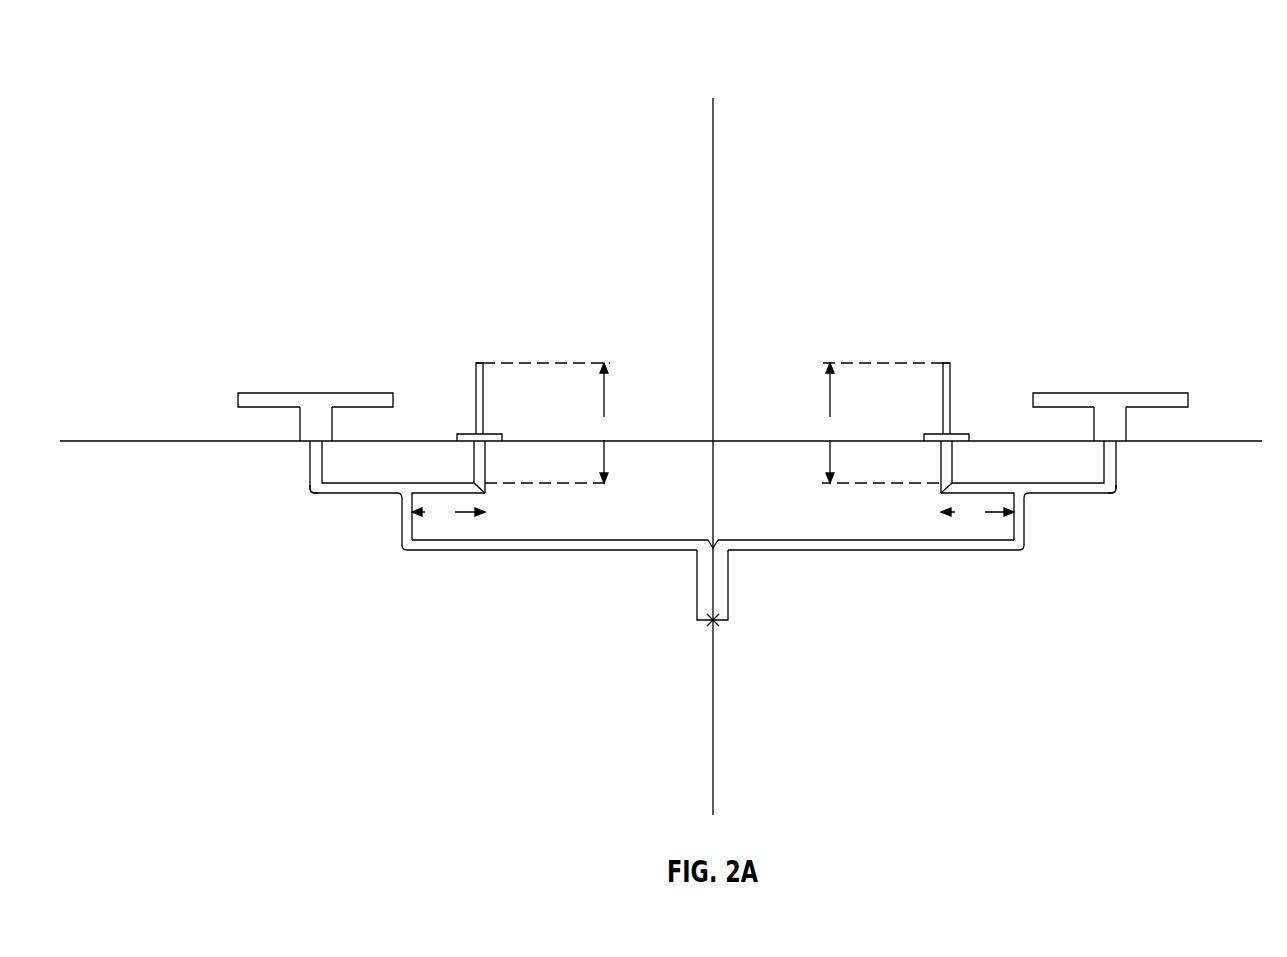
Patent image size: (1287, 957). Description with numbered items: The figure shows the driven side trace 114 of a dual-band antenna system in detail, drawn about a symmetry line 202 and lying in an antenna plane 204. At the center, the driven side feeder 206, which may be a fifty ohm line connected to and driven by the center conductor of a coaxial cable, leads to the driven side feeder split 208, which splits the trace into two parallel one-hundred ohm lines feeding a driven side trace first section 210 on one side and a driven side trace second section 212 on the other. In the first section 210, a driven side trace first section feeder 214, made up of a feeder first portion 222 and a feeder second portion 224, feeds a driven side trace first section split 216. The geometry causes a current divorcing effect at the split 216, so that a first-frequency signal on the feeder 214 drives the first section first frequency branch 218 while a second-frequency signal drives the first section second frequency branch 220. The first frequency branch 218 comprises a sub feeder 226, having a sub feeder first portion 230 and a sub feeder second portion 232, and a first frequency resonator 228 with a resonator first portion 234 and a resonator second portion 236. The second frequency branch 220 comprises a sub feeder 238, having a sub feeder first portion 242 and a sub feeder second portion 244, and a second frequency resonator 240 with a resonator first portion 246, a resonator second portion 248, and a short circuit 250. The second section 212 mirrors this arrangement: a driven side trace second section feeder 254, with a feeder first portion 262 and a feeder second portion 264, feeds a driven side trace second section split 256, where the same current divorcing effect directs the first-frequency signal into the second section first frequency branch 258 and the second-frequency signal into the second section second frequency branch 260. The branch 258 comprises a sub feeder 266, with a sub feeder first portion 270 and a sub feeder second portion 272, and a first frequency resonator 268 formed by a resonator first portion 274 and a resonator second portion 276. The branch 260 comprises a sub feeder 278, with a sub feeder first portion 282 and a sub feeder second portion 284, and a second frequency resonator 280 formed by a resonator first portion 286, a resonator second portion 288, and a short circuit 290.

The driven side trace 114 is at (702, 77).
The symmetry line 202 is at (713, 115).
The antenna plane 204 is at (143, 443).
The driven side feeder 206 is at (730, 600).
The driven side feeder split 208 is at (716, 540).
The driven side trace first section 210 is at (186, 136).
The driven side trace second section 212 is at (1206, 99).
The driven side trace first section feeder 214 is at (550, 584).
The driven side trace first section split 216 is at (415, 482).
The driven side trace first section first frequency branch 218 is at (265, 354).
The driven side trace first section second frequency branch 220 is at (597, 343).
The driven side trace first section feeder first portion 222 is at (680, 550).
The driven side trace first section feeder second portion 224 is at (401, 530).
The driven side trace first section first frequency branch sub feeder 226 is at (308, 497).
The driven side trace first section first frequency resonator 228 is at (388, 340).
The driven side trace first section first frequency branch sub feeder first portion 230 is at (346, 494).
The driven side trace first section first frequency branch sub feeder second portion 232 is at (307, 470).
The driven side trace first section first frequency resonator first portion 234 is at (248, 393).
The driven side trace first section first frequency resonator second portion 236 is at (298, 410).
The driven side trace first section second frequency branch sub feeder 238 is at (481, 491).
The driven side trace first section second frequency resonator 240 is at (511, 403).
The driven side trace first section second frequency branch sub feeder first portion 242 is at (483, 490).
The driven side trace first section second frequency branch sub feeder second portio 244 is at (486, 470).
The driven side trace first section second frequency resonator first portion 246 is at (475, 380).
The driven side trace first section second frequency resonator second portion 248 is at (461, 434).
The driven side trace first section second frequency resonator short circuit 250 is at (484, 363).
The driven side trace second section feeder 254 is at (830, 613).
The driven side trace second section split 256 is at (1018, 480).
The driven side trace second section first frequency branch 258 is at (1184, 361).
The driven side trace second section second frequency branch 260 is at (808, 381).
The driven side trace second section feeder first portion 262 is at (843, 551).
The driven side trace second section feeder second portion 264 is at (1027, 537).
The driven side trace second section first frequency branch sub feeder 266 is at (1131, 506).
The driven side trace second section first frequency resonator 268 is at (1101, 366).
The driven side trace second section first frequency branch sub feeder first portion 270 is at (1087, 494).
The driven side trace second section first frequency branch sub feeder second portio 272 is at (1119, 468).
The driven side trace second section first frequency resonator first portion 274 is at (1171, 393).
The driven side trace second section first frequency resonator second portion 276 is at (1128, 430).
The driven side trace second section second frequency branch sub feeder 278 is at (1001, 530).
The driven side trace second section second frequency resonator 280 is at (970, 355).
The driven side trace second section second frequency branch sub feeder first portio 282 is at (958, 495).
The driven side trace second section second frequency branch sub feeder second porti 284 is at (939, 470).
The driven side trace second section second frequency resonator first portion 286 is at (942, 395).
The driven side trace second section second frequency resonator second portion 288 is at (931, 434).
The driven side trace second section second frequency resonator short circuit 290 is at (943, 363).